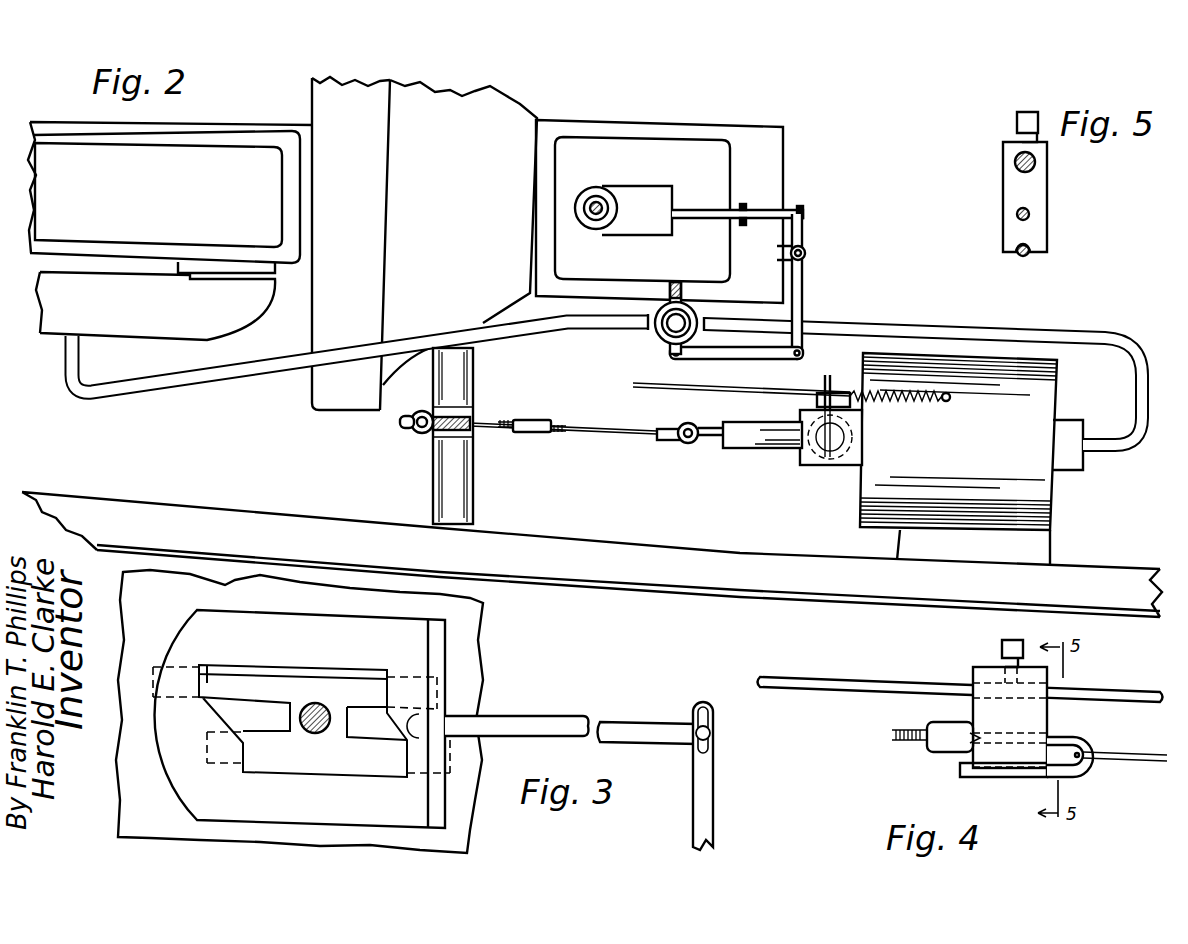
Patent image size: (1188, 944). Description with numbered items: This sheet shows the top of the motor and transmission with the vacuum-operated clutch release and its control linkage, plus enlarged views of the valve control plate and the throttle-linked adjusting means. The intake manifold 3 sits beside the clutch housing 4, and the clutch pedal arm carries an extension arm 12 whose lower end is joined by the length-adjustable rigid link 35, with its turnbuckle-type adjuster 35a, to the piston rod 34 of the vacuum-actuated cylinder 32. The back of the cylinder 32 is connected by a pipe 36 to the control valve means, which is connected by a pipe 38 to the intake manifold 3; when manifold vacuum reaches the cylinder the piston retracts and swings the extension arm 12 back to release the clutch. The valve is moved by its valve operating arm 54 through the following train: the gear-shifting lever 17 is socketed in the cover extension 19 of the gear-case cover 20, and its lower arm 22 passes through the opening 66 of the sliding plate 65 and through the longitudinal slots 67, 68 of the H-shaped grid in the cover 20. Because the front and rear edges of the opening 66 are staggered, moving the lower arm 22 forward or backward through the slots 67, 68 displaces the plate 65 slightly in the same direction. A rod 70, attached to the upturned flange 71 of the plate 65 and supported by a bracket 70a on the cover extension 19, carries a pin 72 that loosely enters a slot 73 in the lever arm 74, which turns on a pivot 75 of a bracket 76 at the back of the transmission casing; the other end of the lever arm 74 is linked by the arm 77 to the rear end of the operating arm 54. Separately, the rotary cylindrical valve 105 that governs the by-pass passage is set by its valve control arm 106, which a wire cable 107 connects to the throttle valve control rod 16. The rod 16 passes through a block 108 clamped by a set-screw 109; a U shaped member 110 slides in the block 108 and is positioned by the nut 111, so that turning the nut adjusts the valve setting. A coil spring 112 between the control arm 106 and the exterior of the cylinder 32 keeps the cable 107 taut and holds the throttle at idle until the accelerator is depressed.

In FIG. 2, the intake manifold 3 is at (130, 335).
In FIG. 2, the clutch housing 4 is at (333, 402).
In FIG. 2, the extension arm 12 is at (410, 430).
In FIG. 4, the throttle valve control rod 16 is at (1090, 694).
In FIG. 5, the throttle valve control rod 16 is at (1036, 162).
In FIG. 2, the gear-shifting lever 17 is at (597, 204).
In FIG. 2, the cover extension 19 is at (625, 192).
In FIG. 2, the gear-case cover 20 is at (664, 130).
In FIG. 3, the gear-case cover 20 is at (467, 647).
In FIG. 3, the lower arm 22 is at (311, 703).
In FIG. 2, the vacuum-actuated cylinder 32 is at (1055, 402).
In FIG. 2, the piston rod 34 is at (747, 425).
In FIG. 2, the length-adjustable rigid link 35 is at (573, 429).
In FIG. 2, the turnbuckle 35a is at (533, 417).
In FIG. 2, the pipe 36 is at (981, 328).
In FIG. 2, the pipe 38 is at (505, 330).
In FIG. 2, the valve operating arm 54 is at (667, 342).
In FIG. 3, the plate 65 is at (388, 625).
In FIG. 3, the opening 66 is at (383, 760).
In FIG. 3, the longitudinal slot 67 is at (207, 680).
In FIG. 3, the longitudinal slot 68 is at (290, 750).
In FIG. 2, the rod 70 is at (800, 209).
In FIG. 3, the rod 70 is at (538, 725).
In FIG. 2, the bracket 70a is at (746, 205).
In FIG. 3, the upturned flange 71 is at (440, 670).
In FIG. 3, the pin 72 is at (710, 733).
In FIG. 3, the slot 73 is at (705, 710).
In FIG. 2, the lever arm 74 is at (802, 285).
In FIG. 3, the lever arm 74 is at (705, 762).
In FIG. 2, the pivot 75 is at (806, 253).
In FIG. 2, the bracket 76 is at (803, 247).
In FIG. 2, the arm 77 is at (750, 359).
In FIG. 2, the rotary cylindrical valve 105 is at (813, 465).
In FIG. 2, the valve control arm 106 is at (830, 393).
In FIG. 2, the wire cable 107 is at (657, 389).
In FIG. 4, the wire cable 107 is at (1134, 755).
In FIG. 4, the block 108 is at (1037, 715).
In FIG. 5, the block 108 is at (1030, 188).
In FIG. 4, the set-screw 109 is at (1000, 652).
In FIG. 5, the set-screw 109 is at (1017, 128).
In FIG. 4, the U shaped member 110 is at (1077, 772).
In FIG. 5, the U shaped member 110 is at (1066, 263).
In FIG. 4, the nut 111 is at (942, 722).
In FIG. 2, the coil spring 112 is at (897, 400).